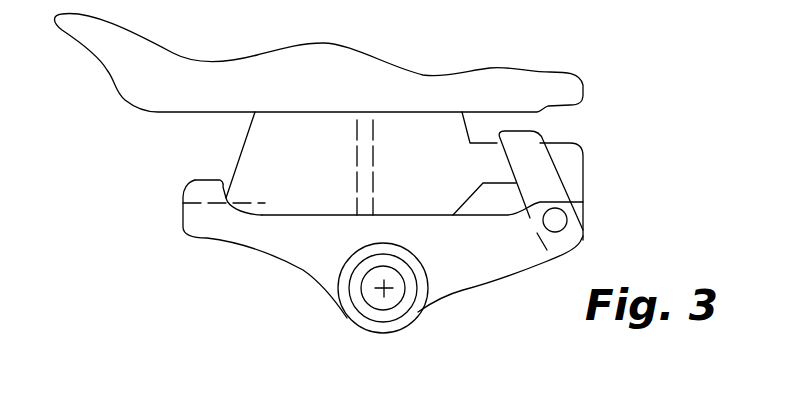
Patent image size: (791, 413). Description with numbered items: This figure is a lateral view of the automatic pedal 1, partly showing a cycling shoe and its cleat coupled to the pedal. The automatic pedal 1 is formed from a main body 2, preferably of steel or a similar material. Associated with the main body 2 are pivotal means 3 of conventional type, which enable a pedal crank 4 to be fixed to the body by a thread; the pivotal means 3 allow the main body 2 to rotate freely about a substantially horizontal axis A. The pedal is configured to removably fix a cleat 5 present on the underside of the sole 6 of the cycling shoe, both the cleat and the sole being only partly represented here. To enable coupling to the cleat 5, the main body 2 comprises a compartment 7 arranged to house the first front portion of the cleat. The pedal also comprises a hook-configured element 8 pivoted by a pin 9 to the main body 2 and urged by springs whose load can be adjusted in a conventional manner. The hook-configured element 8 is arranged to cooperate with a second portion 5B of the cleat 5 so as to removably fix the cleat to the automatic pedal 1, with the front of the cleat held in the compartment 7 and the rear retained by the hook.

The automatic pedal 1 is at (638, 94).
The main body 2 is at (501, 263).
The pivotal means 3 is at (393, 298).
The pedal crank 4 is at (280, 203).
The cleat 5 is at (339, 181).
The second portion of the cleat 5B is at (492, 161).
The sole 6 is at (318, 76).
The compartment 7 is at (230, 199).
The hook-configured element 8 is at (545, 170).
The pin 9 is at (560, 222).
The horizontal axis A is at (383, 288).